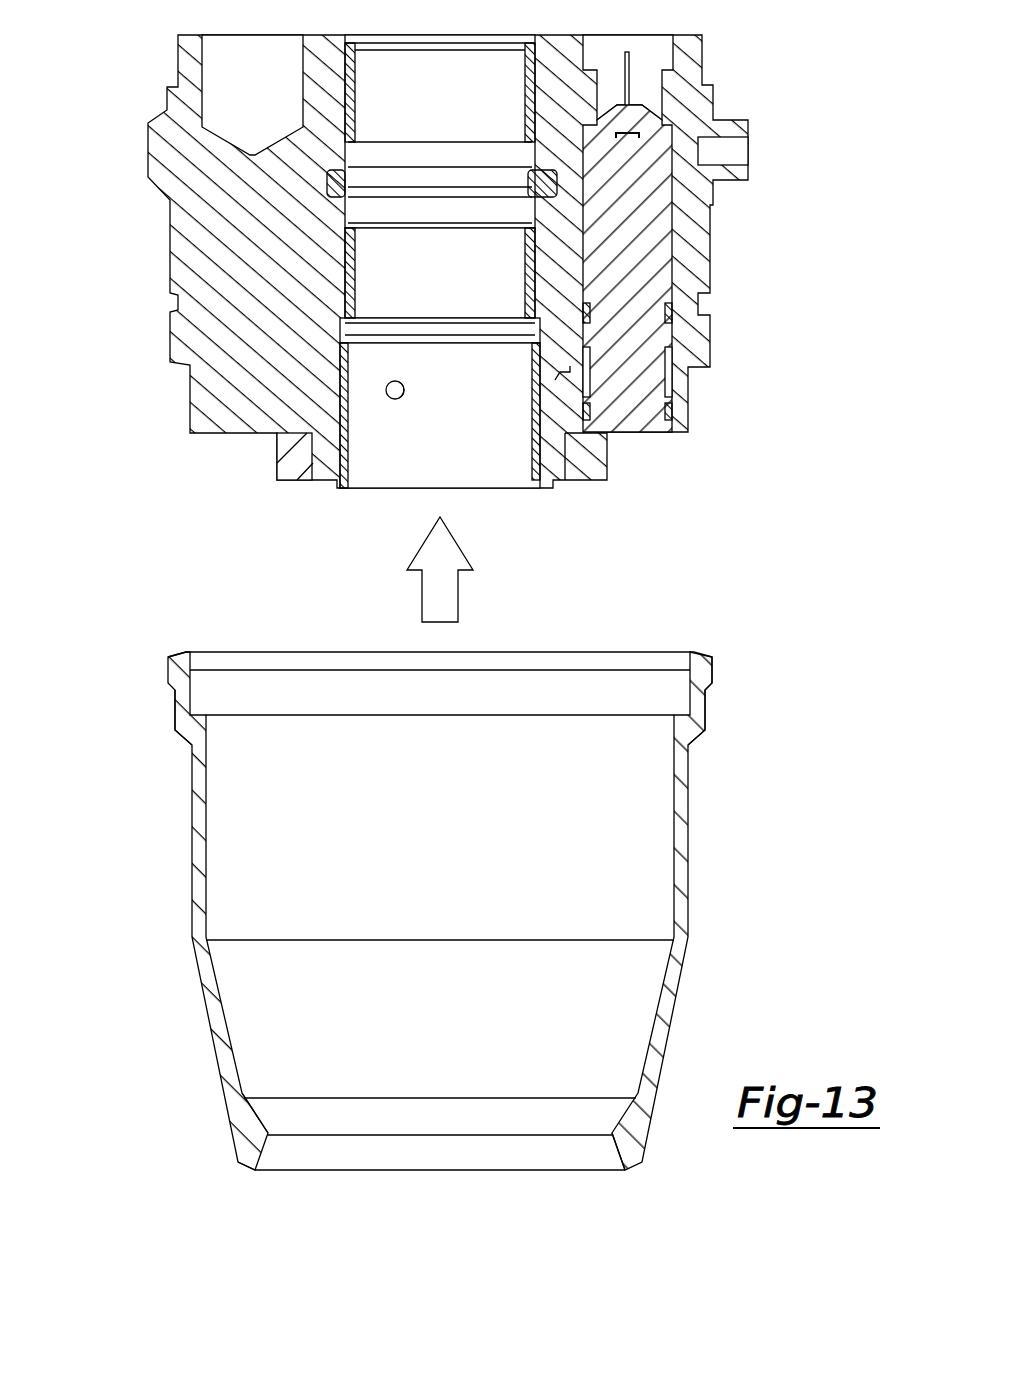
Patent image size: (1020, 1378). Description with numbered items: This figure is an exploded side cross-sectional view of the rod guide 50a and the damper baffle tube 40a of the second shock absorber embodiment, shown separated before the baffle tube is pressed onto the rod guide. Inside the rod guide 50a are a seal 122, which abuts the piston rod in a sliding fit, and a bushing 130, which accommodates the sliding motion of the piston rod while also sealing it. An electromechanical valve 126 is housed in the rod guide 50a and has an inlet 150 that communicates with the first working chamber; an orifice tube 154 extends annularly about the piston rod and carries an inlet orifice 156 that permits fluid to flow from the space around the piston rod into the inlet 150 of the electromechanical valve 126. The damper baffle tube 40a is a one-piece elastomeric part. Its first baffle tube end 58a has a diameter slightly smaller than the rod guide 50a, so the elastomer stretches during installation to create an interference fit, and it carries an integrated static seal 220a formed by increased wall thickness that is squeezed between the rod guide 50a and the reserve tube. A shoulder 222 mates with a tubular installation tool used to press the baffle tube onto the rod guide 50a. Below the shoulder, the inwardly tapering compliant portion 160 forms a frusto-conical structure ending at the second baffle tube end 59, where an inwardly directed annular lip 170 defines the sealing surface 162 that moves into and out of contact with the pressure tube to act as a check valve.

The rod guide 50a is at (170, 148).
The seal 122 is at (340, 178).
The bushing 130 is at (348, 268).
The electromechanical valve 126 is at (637, 258).
The inlet orifice 156 is at (403, 397).
The inlet 150 is at (558, 374).
The orifice tube 154 is at (350, 452).
The first baffle tube end 58a is at (183, 658).
The integrated static seal 220a is at (705, 668).
The shoulder 222 is at (184, 735).
The damper baffle tube 40a is at (445, 913).
The compliant portion 160 is at (667, 1015).
The sealing surface 162 is at (267, 1134).
The second baffle tube end 59 is at (242, 1165).
The annular lip 170 is at (627, 1135).